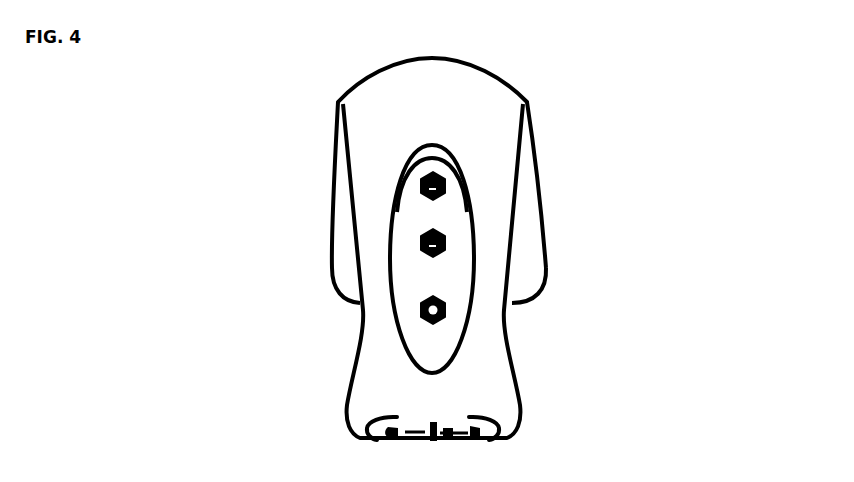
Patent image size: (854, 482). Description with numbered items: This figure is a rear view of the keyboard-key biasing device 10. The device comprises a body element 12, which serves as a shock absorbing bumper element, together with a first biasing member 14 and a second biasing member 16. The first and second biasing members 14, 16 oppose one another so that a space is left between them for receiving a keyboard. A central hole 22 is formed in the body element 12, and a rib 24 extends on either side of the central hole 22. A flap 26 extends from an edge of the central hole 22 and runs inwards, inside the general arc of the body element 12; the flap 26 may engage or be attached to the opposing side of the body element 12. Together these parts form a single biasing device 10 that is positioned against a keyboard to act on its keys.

The keyboard-key biasing device 10 is at (623, 161).
The body element 12 is at (512, 317).
The first biasing member 14 is at (329, 277).
The second biasing member 16 is at (339, 421).
The central hole 22 is at (391, 304).
The rib 24 is at (360, 216).
The flap 26 is at (455, 227).